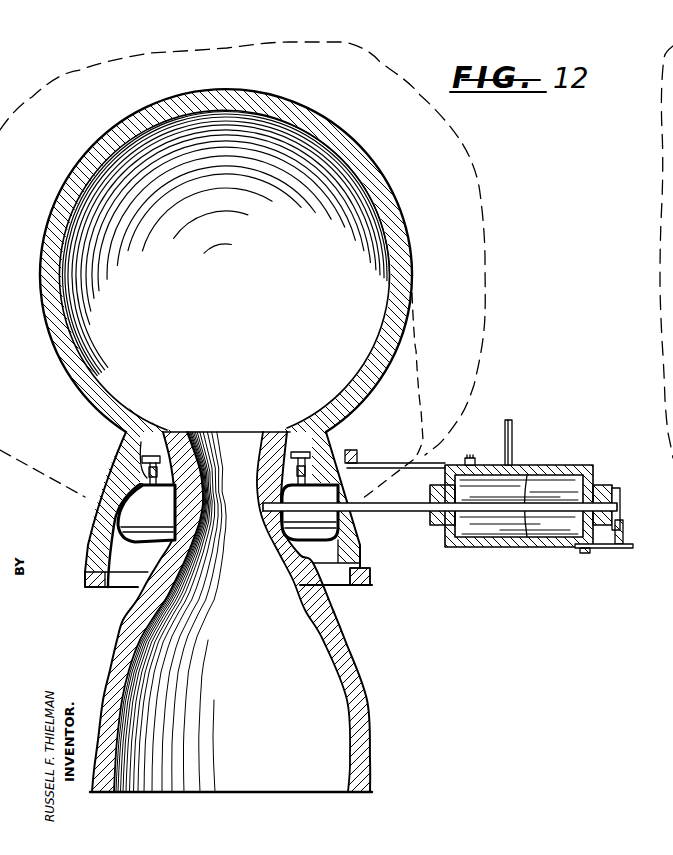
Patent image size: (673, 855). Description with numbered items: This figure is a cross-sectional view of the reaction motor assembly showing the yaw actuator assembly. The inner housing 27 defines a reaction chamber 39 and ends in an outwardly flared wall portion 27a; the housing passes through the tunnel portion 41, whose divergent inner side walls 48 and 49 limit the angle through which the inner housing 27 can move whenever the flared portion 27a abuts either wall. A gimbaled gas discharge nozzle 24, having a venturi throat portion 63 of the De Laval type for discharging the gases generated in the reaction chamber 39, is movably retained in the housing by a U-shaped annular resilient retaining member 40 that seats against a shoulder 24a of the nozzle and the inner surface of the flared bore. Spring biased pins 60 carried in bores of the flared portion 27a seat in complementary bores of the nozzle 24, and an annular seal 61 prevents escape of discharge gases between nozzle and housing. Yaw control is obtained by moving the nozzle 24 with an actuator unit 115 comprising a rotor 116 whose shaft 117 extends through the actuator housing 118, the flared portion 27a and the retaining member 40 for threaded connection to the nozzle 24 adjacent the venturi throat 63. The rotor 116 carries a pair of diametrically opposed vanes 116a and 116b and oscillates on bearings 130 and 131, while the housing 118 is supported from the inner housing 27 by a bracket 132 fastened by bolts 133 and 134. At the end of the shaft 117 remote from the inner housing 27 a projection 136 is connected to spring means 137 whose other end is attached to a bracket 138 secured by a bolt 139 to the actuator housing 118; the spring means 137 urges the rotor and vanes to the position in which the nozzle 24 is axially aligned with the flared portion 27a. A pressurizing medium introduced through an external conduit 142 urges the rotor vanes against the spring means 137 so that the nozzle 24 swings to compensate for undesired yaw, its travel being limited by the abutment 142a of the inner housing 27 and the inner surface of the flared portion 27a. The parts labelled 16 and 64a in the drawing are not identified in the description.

The flange 16 is at (190, 432).
The gas discharge nozzle 24 is at (112, 652).
The shoulder 24a is at (167, 530).
The inner housing 27 is at (380, 195).
The outwardly flared wall portion 27a is at (370, 565).
The reaction chamber 39 is at (232, 304).
The resilient retaining member 40 is at (325, 580).
The outline 41 is at (492, 267).
The divergent inner side wall 48 is at (415, 373).
The divergent inner side wall 49 is at (30, 428).
The spring biased pins 60 is at (160, 456).
The annular seal 61 is at (152, 456).
The venturi throat portion 63 is at (213, 470).
The bolt 64a is at (295, 480).
The actuator unit 115 is at (566, 459).
The rotor 116 is at (553, 510).
The vane 116a is at (540, 493).
The vane 116b is at (522, 540).
The shaft 117 is at (620, 502).
The actuator housing 118 is at (484, 548).
The bearing 130 is at (598, 488).
The bearing 131 is at (440, 488).
The bracket 132 is at (380, 463).
The bolt 133 is at (352, 450).
The bolt 134 is at (482, 452).
The projection 136 is at (624, 510).
The spring means 137 is at (626, 527).
The bracket 138 is at (612, 548).
The bolt 139 is at (587, 553).
The external conduit 142 is at (512, 432).
The abutment 142a is at (108, 588).